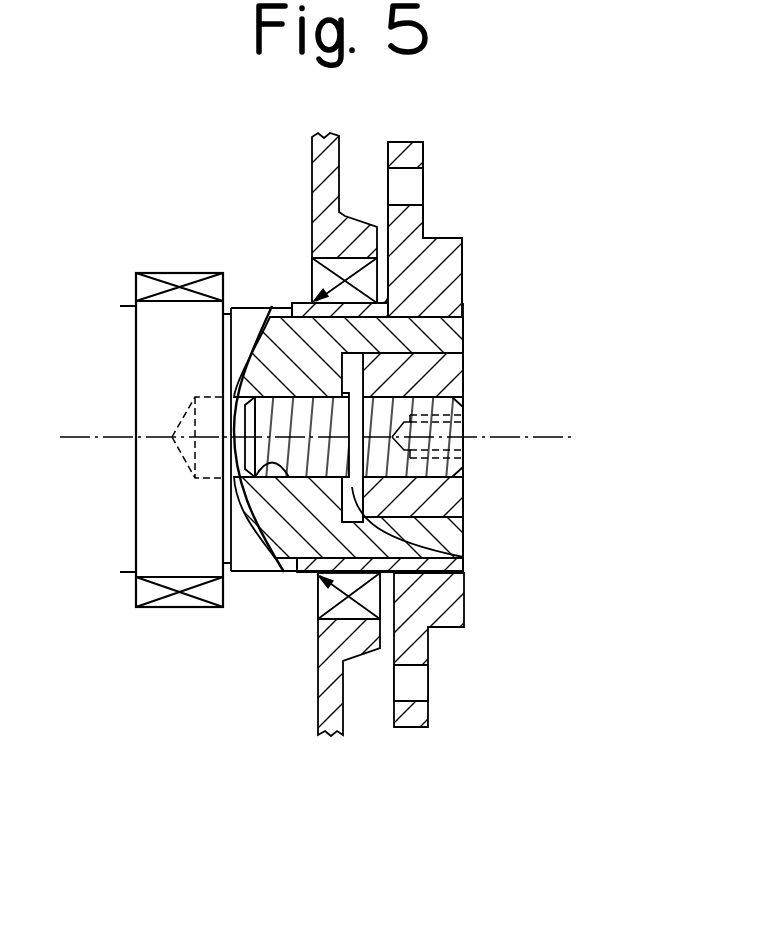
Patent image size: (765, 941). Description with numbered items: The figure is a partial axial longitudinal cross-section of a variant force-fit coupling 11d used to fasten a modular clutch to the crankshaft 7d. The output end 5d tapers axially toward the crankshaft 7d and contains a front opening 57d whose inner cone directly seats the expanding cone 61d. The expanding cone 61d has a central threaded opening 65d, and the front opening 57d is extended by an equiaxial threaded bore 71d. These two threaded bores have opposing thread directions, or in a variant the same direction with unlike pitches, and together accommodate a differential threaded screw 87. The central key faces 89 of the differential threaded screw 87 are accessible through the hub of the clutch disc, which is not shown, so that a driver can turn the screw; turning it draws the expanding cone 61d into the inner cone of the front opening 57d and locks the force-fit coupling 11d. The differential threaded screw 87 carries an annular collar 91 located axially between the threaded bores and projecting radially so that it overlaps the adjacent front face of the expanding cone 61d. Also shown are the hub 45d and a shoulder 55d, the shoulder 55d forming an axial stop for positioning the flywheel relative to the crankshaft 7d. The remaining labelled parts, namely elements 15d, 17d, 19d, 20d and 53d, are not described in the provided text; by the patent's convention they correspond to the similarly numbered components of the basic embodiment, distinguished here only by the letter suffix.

The crankshaft 7d is at (150, 360).
The bearing 19d is at (167, 277).
The rotation axis 20d is at (92, 438).
The output end 5d is at (278, 348).
The inner sleeve 15d is at (345, 262).
The outer sleeve 17d is at (334, 153).
The hub 45d is at (452, 258).
The shoulder 55d is at (290, 314).
The hub body 53d is at (432, 322).
The central key faces 89 is at (463, 413).
The force-fit coupling 11d is at (488, 420).
The central threaded opening 65d is at (458, 463).
The expanding cone 61d is at (457, 492).
The front opening 57d is at (463, 503).
The annular collar 91 is at (466, 556).
The threaded bore 71d is at (282, 470).
The differential threaded screw 87 is at (318, 465).